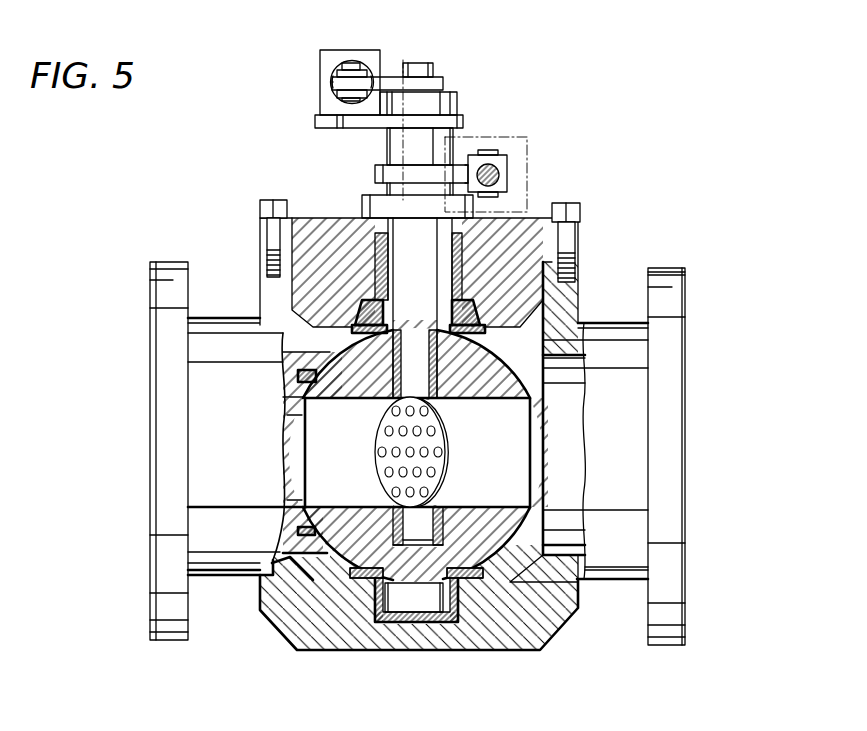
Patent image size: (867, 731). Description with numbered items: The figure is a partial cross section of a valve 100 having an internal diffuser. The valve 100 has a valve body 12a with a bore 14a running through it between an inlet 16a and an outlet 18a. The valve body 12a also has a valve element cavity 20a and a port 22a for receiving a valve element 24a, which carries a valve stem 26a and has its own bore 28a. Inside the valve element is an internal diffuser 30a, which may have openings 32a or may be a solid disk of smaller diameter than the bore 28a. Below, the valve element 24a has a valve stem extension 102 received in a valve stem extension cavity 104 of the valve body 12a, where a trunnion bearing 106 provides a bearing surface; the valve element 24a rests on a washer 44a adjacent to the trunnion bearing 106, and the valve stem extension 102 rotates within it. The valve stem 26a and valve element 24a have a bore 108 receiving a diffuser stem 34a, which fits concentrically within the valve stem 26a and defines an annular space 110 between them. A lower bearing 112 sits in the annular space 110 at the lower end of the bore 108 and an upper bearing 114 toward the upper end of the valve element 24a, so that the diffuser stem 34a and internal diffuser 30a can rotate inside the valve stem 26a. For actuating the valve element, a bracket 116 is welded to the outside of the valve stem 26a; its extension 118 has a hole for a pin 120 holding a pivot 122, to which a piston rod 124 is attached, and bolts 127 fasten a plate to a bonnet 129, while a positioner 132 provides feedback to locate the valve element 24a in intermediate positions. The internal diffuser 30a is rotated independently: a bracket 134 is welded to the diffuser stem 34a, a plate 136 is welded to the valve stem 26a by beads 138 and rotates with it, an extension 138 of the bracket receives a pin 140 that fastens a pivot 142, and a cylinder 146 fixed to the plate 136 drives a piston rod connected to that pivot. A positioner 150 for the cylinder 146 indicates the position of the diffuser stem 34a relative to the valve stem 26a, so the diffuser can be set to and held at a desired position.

The valve 100 is at (702, 140).
The valve body 12a is at (647, 602).
The bore 14a is at (293, 470).
The inlet 16a is at (150, 433).
The outlet 18a is at (685, 445).
The valve element cavity 20a is at (578, 586).
The port 22a is at (303, 263).
The valve element 24a is at (527, 525).
The valve stem 26a is at (387, 147).
The bore 28a is at (367, 482).
The internal diffuser 30a is at (440, 468).
The openings 32a is at (373, 445).
The diffuser stem 34a is at (437, 70).
The washer 44a is at (538, 650).
The valve stem extension 102 is at (413, 605).
The valve stem extension cavity 104 is at (392, 618).
The trunnion bearing 106 is at (463, 605).
The bore 108 is at (289, 394).
The annular space 110 is at (393, 360).
The lower bearing 112 is at (270, 612).
The upper bearing 114 is at (440, 370).
The bracket 116 is at (377, 173).
The extension 118 is at (508, 172).
The pin 120 is at (495, 150).
The pivot 122 is at (507, 158).
The piston rod 124 is at (507, 183).
The bolts 127 is at (580, 213).
The bonnet 129 is at (583, 246).
The positioner 132 is at (363, 205).
The bracket 134 is at (392, 77).
The plate 136 is at (317, 123).
The extension 138 is at (332, 82).
The pin 140 is at (353, 65).
The pivot 142 is at (330, 72).
The cylinder 146 is at (362, 65).
The positioner 150 is at (458, 102).